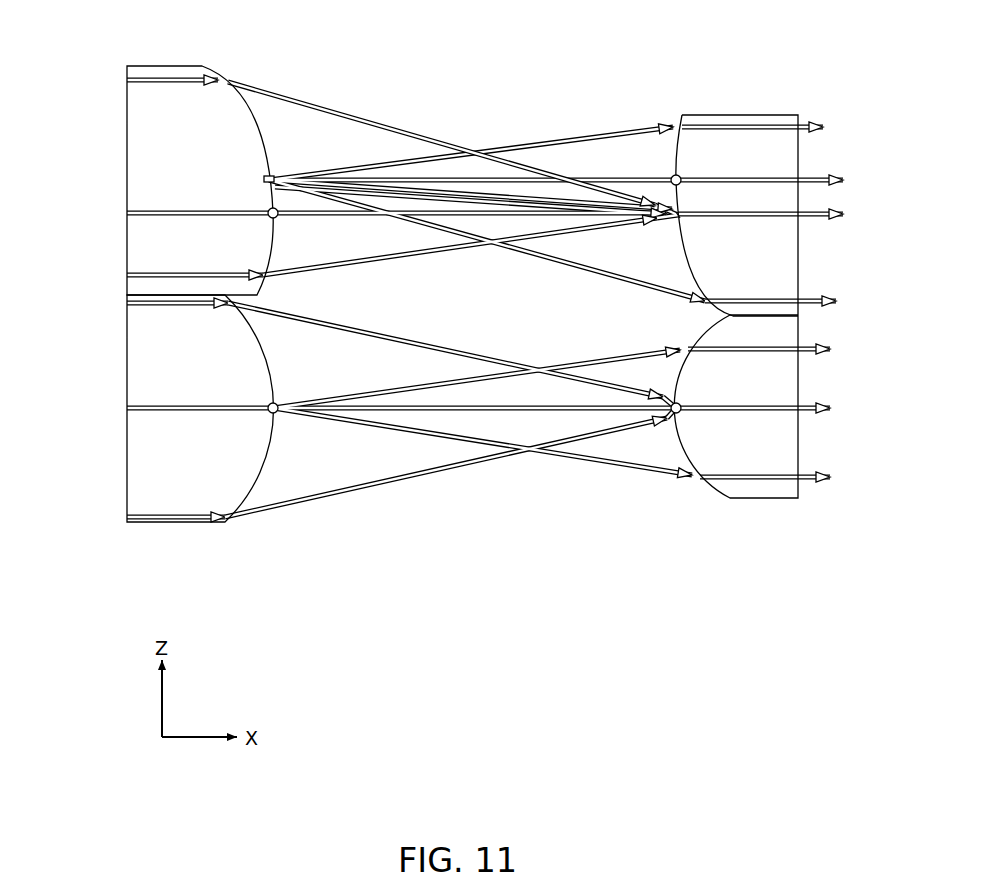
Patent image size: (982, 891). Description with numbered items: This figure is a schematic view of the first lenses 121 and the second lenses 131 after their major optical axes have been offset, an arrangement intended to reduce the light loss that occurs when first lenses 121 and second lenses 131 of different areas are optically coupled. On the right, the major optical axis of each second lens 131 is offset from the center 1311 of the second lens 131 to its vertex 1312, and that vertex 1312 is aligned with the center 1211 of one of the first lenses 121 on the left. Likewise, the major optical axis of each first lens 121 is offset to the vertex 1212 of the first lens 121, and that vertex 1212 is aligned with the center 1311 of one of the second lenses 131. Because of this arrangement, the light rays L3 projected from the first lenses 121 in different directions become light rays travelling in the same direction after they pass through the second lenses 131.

The first lens 121 is at (175, 266).
The center of the first lens 1211 is at (269, 177).
The vertex of the first lens 1212 is at (266, 216).
The second lens 131 is at (756, 263).
The center of the second lens 1311 is at (680, 218).
The vertex of the second lens 1312 is at (675, 176).
The light rays L3 is at (362, 113).